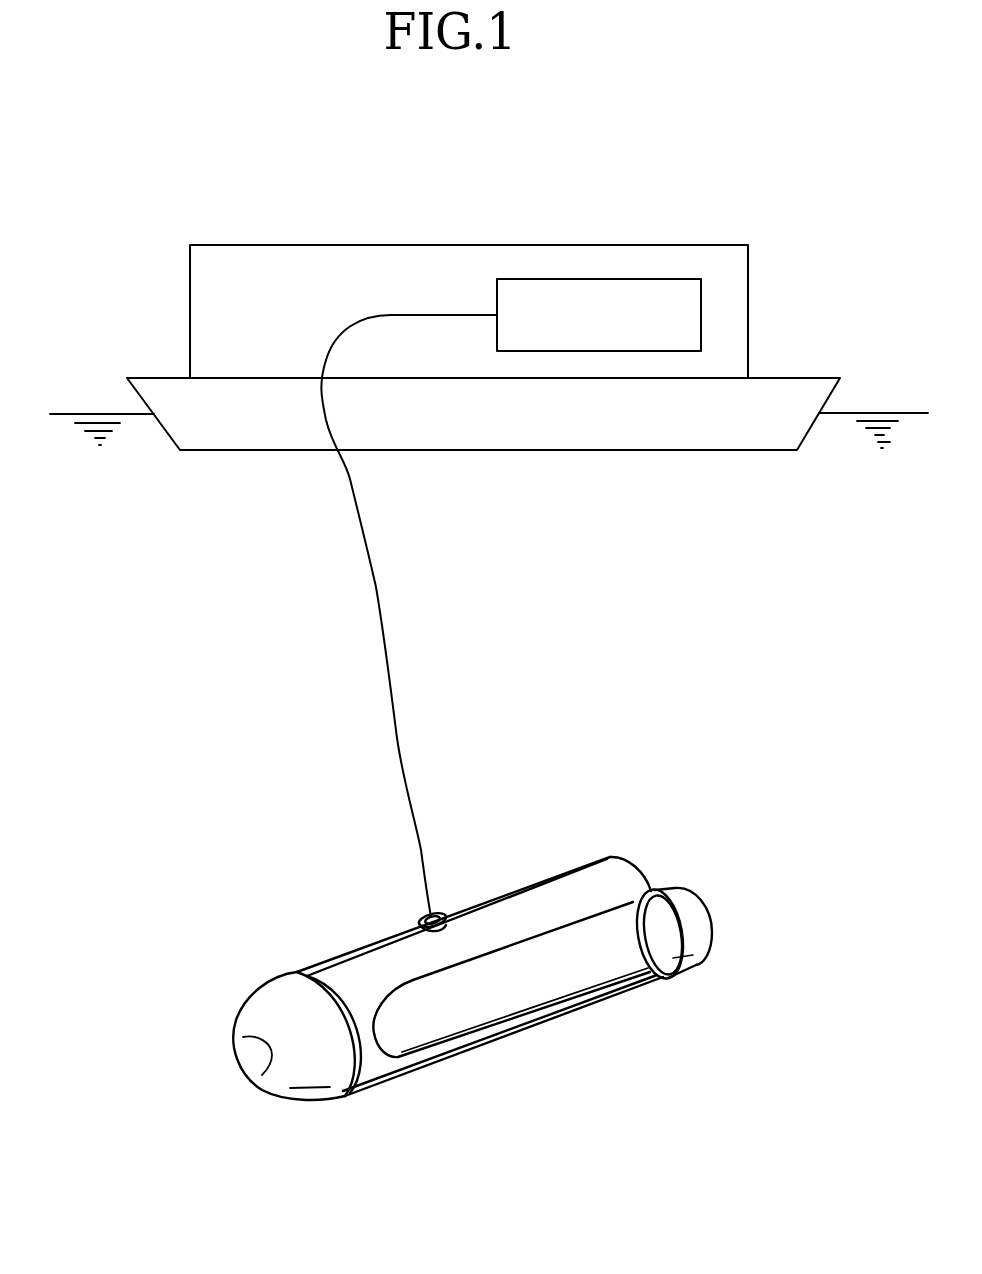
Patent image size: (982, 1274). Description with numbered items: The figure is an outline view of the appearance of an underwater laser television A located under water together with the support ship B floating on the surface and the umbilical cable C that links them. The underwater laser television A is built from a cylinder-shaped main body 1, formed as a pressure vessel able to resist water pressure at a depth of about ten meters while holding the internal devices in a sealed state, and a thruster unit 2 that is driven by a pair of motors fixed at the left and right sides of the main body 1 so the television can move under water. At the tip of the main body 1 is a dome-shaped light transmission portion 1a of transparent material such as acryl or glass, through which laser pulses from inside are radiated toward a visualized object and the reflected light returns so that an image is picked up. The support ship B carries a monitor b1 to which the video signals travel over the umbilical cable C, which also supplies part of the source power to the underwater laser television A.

The main body 1 is at (518, 890).
The light transmission portion 1a is at (265, 1007).
The thruster unit 2 is at (580, 997).
The underwater laser television A is at (600, 836).
The support ship B is at (489, 271).
The monitor b1 is at (506, 226).
The umbilical cable C is at (376, 587).